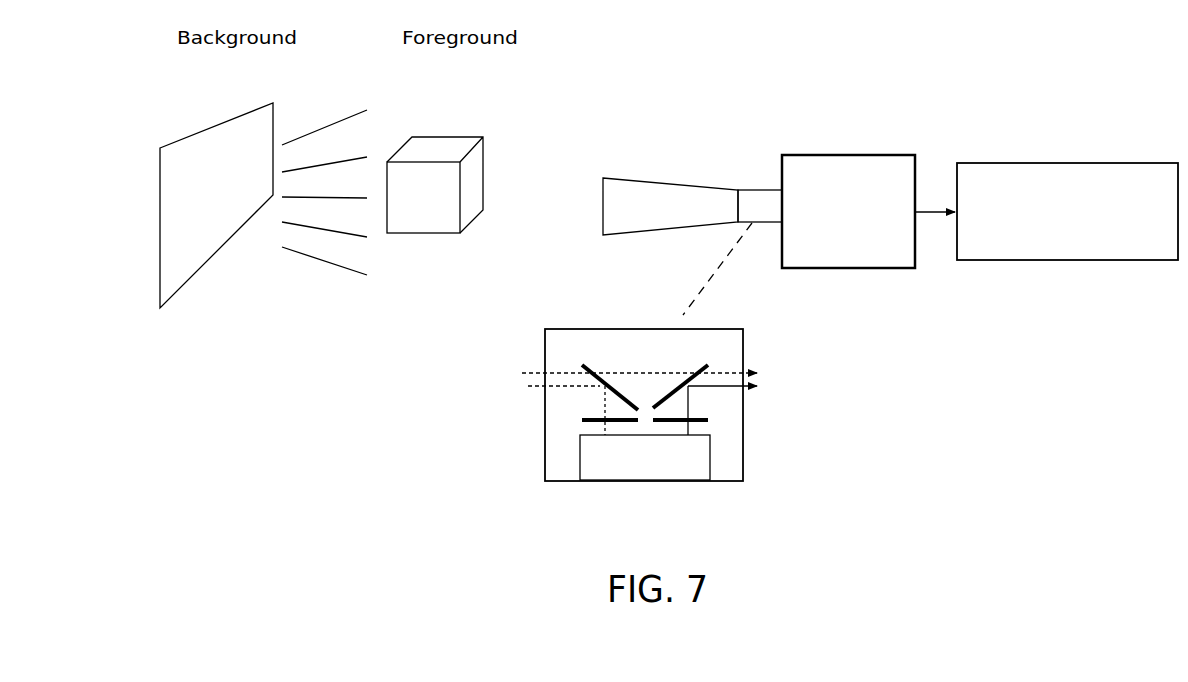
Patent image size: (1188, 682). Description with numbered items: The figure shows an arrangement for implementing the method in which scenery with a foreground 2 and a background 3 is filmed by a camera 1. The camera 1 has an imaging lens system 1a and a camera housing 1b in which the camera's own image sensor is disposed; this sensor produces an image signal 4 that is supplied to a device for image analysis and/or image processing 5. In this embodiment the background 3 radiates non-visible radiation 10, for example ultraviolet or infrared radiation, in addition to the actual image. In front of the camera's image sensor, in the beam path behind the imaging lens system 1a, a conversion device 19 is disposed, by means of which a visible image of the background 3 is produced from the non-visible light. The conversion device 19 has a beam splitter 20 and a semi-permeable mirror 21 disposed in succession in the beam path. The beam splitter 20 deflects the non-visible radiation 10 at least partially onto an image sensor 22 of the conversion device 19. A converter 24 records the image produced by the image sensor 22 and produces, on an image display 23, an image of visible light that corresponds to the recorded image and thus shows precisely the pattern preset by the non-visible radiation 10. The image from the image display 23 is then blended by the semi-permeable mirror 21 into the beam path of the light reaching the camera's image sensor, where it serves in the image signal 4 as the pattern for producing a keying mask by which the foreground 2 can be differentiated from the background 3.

The camera 1 is at (887, 155).
The imaging lens system 1a is at (670, 188).
The camera housing 1b is at (817, 155).
The foreground 2 is at (445, 135).
The background 3 is at (218, 123).
The image signal 4 is at (934, 209).
The device for image analysis and/or image processing 5 is at (1068, 163).
The non-visible radiation 10 is at (330, 123).
The conversion device 19 is at (757, 190).
The beam splitter 20 is at (595, 366).
The semi-permeable mirror 21 is at (697, 366).
The image sensor 22 is at (570, 423).
The image display 23 is at (710, 420).
The converter 24 is at (702, 474).